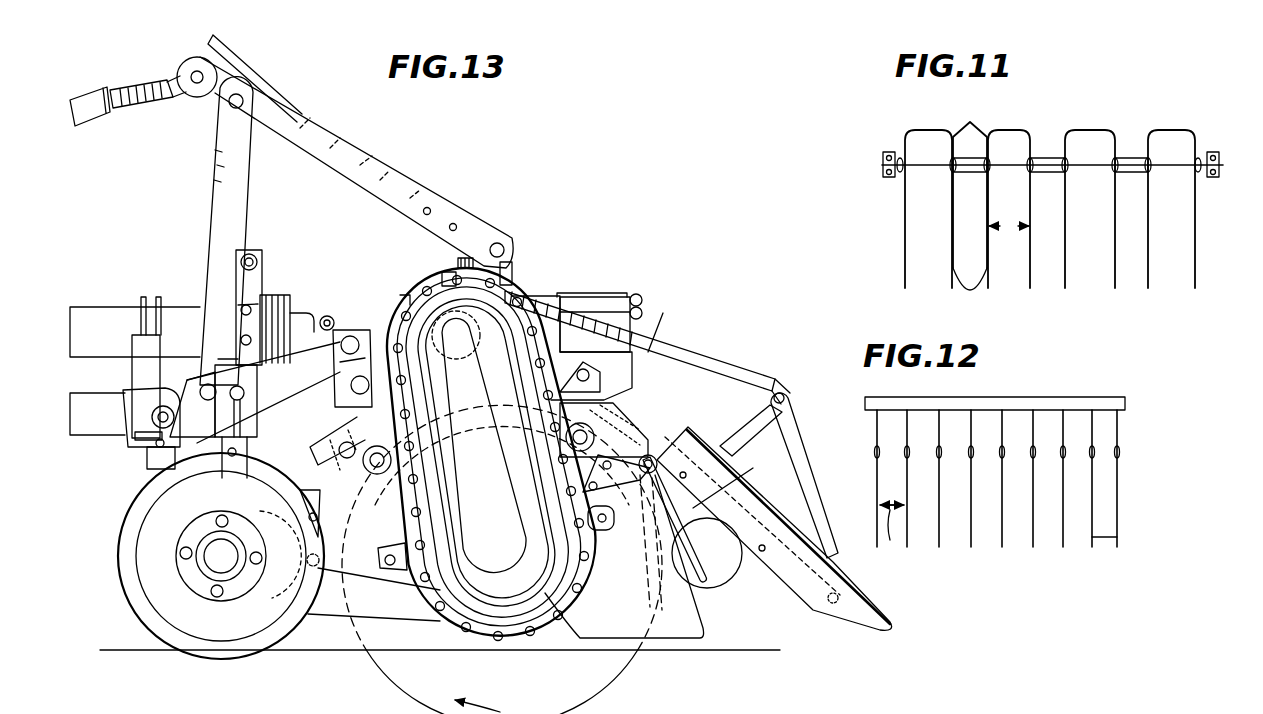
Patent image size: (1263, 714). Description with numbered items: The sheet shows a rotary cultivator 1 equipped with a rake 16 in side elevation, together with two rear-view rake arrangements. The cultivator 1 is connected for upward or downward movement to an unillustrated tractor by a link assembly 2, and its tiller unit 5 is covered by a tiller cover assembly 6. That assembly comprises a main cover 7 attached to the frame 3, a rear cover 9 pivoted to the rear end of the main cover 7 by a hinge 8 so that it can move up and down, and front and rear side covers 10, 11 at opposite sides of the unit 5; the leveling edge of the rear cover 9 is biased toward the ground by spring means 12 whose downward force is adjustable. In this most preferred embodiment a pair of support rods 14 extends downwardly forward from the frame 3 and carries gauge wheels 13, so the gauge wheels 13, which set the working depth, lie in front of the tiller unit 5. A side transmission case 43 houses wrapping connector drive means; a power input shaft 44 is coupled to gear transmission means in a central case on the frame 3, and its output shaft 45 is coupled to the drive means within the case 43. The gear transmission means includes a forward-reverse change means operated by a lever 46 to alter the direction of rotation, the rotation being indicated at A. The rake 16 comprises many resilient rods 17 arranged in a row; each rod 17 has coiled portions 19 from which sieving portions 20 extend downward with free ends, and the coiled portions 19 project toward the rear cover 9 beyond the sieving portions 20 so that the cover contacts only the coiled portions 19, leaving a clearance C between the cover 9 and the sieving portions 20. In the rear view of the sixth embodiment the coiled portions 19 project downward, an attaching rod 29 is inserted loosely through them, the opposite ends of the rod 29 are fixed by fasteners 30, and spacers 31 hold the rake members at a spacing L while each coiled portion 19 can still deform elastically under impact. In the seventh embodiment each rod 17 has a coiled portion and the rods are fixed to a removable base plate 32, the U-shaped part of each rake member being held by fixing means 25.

In FIG. 13, the rotary cultivator 1 is at (675, 272).
In FIG. 13, the link assembly 2 is at (97, 440).
In FIG. 13, the frame 3 is at (492, 220).
In FIG. 13, the tiller unit 5 is at (352, 640).
In FIG. 13, the tiller cover assembly 6 is at (352, 424).
In FIG. 13, the main cover 7 is at (594, 403).
In FIG. 13, the hinge 8 is at (640, 428).
In FIG. 13, the rear cover 9 is at (794, 538).
In FIG. 13, the front side cover 10 is at (323, 606).
In FIG. 13, the rear side cover 11 is at (680, 640).
In FIG. 13, the spring means 12 is at (712, 352).
In FIG. 13, the gauge wheels 13 is at (143, 600).
In FIG. 13, the support rods 14 is at (287, 408).
In FIG. 13, the rake 16 is at (702, 558).
In FIG. 11, the rake 16 is at (902, 200).
In FIG. 12, the rake 16 is at (1122, 492).
In FIG. 11, the resilient rod 17 is at (970, 292).
In FIG. 13, the coiled portions 19 is at (692, 428).
In FIG. 11, the coiled portions 19 is at (970, 130).
In FIG. 12, the coiled portions 19 is at (1118, 452).
In FIG. 12, the sieving portions 20 is at (1117, 520).
In FIG. 11, the fixing means 25 is at (882, 146).
In FIG. 12, the fixing means 25 is at (1120, 395).
In FIG. 11, the attaching rod 29 is at (1009, 168).
In FIG. 11, the fasteners 30 is at (890, 150).
In FIG. 11, the spacers 31 is at (1047, 157).
In FIG. 13, the base plate 32 is at (618, 484).
In FIG. 12, the base plate 32 is at (1034, 397).
In FIG. 13, the side transmission case 43 is at (467, 558).
In FIG. 13, the power input shaft 44 is at (320, 320).
In FIG. 13, the output shaft 45 is at (517, 287).
In FIG. 13, the lever 46 is at (257, 73).
In FIG. 13, the rotation direction A is at (477, 696).
In FIG. 13, the clearance C is at (731, 482).
In FIG. 11, the distance L is at (1009, 228).
In FIG. 12, the distance L is at (892, 536).